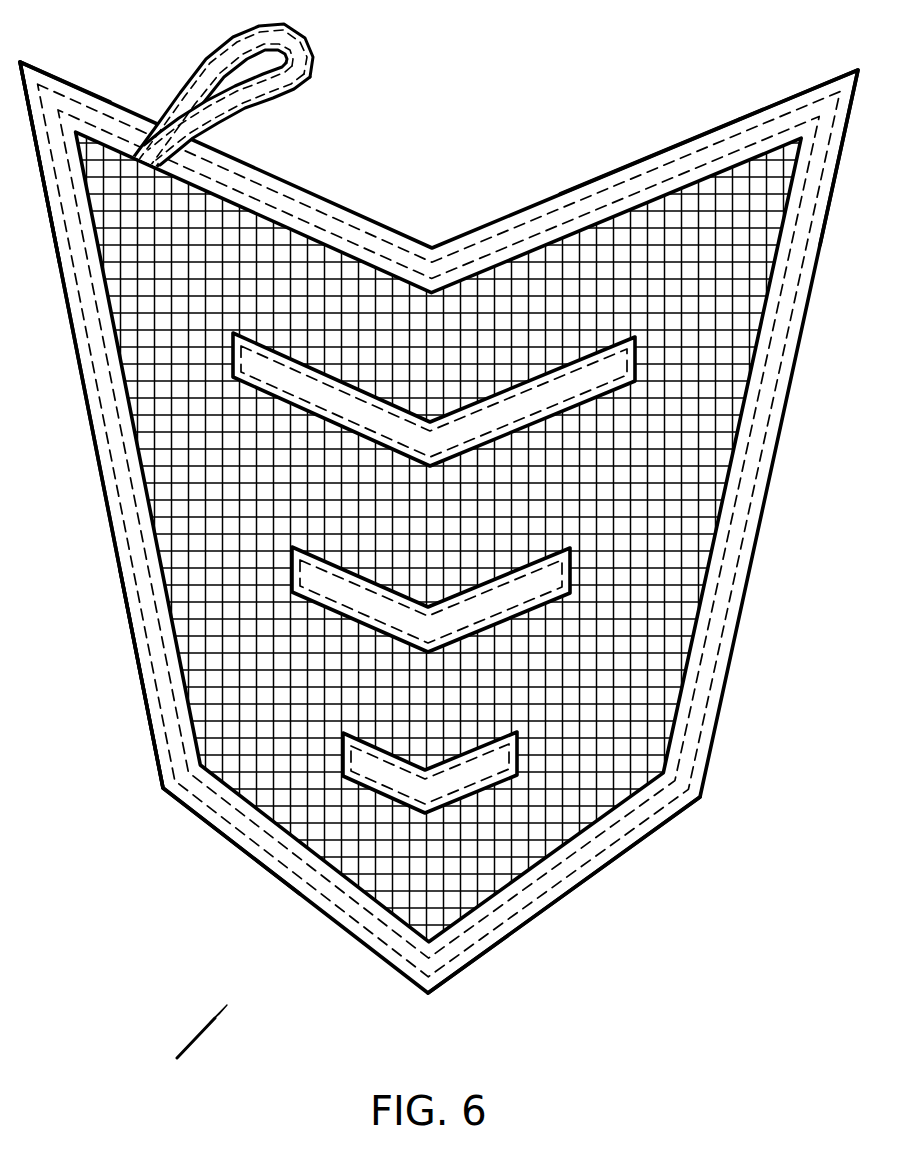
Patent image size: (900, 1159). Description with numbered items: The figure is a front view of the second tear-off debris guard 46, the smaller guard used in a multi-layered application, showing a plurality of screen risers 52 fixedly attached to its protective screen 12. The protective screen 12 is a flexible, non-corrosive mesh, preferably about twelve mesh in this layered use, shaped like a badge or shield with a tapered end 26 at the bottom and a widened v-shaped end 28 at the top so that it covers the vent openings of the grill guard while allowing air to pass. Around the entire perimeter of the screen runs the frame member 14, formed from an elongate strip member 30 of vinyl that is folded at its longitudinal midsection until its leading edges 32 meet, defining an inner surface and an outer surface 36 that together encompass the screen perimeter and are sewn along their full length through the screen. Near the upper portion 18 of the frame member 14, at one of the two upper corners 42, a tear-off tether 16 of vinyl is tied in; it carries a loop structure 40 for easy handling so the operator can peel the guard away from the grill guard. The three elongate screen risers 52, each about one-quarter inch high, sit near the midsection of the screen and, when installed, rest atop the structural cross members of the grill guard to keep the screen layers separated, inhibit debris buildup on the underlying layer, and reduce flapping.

The protective screen 12 is at (643, 675).
The frame member 14 is at (133, 645).
The tear-off tether 16 is at (276, 94).
The upper portion 18 is at (770, 105).
The tapered end 26 is at (590, 880).
The widened v-shaped end 28 is at (640, 160).
The elongate strip member 30 is at (175, 800).
The leading edges 32 is at (572, 235).
The outer surface 36 is at (752, 572).
The loop structure 40 is at (238, 108).
The upper corners 42 is at (53, 75).
The second tear-off debris guard 46 is at (186, 1044).
The screen risers 52 is at (380, 790).